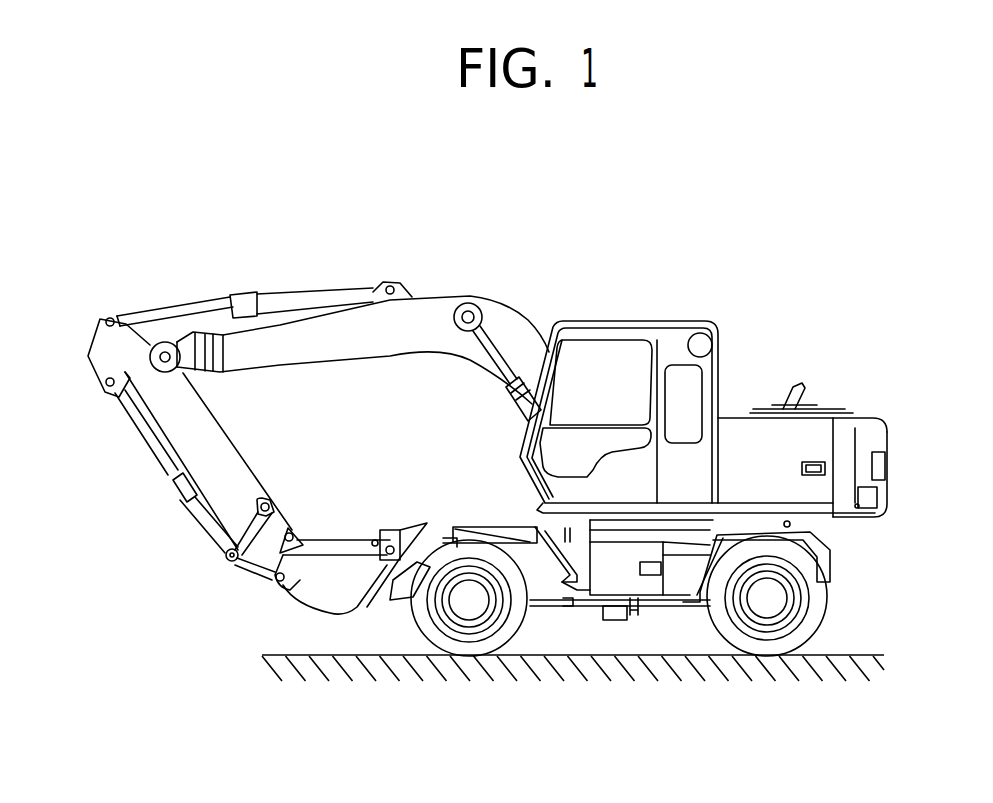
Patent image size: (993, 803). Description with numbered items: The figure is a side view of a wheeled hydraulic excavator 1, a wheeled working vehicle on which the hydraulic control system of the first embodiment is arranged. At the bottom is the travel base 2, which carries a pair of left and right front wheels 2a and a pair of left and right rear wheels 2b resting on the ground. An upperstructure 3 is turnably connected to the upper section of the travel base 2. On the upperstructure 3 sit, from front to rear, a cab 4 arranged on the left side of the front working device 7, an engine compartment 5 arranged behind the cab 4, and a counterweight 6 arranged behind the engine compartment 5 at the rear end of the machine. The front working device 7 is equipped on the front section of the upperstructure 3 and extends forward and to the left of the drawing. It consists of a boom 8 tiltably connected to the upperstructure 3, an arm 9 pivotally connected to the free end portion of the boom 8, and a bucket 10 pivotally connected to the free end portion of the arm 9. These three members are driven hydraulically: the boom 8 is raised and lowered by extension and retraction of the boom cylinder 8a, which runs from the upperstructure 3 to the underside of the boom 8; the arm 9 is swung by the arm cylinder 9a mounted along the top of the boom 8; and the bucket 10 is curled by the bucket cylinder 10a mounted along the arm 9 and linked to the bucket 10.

The wheeled hydraulic excavator 1 is at (370, 208).
The travel base 2 is at (831, 550).
The front wheels 2a is at (527, 633).
The rear wheels 2b is at (825, 627).
The upperstructure 3 is at (848, 362).
The cab 4 is at (690, 322).
The engine compartment 5 is at (746, 414).
The counterweight 6 is at (882, 419).
The front working device 7 is at (480, 278).
The boom 8 is at (392, 346).
The boom cylinder 8a is at (513, 398).
The arm 9 is at (226, 447).
The arm cylinder 9a is at (272, 288).
The bucket 10 is at (347, 539).
The bucket cylinder 10a is at (157, 457).